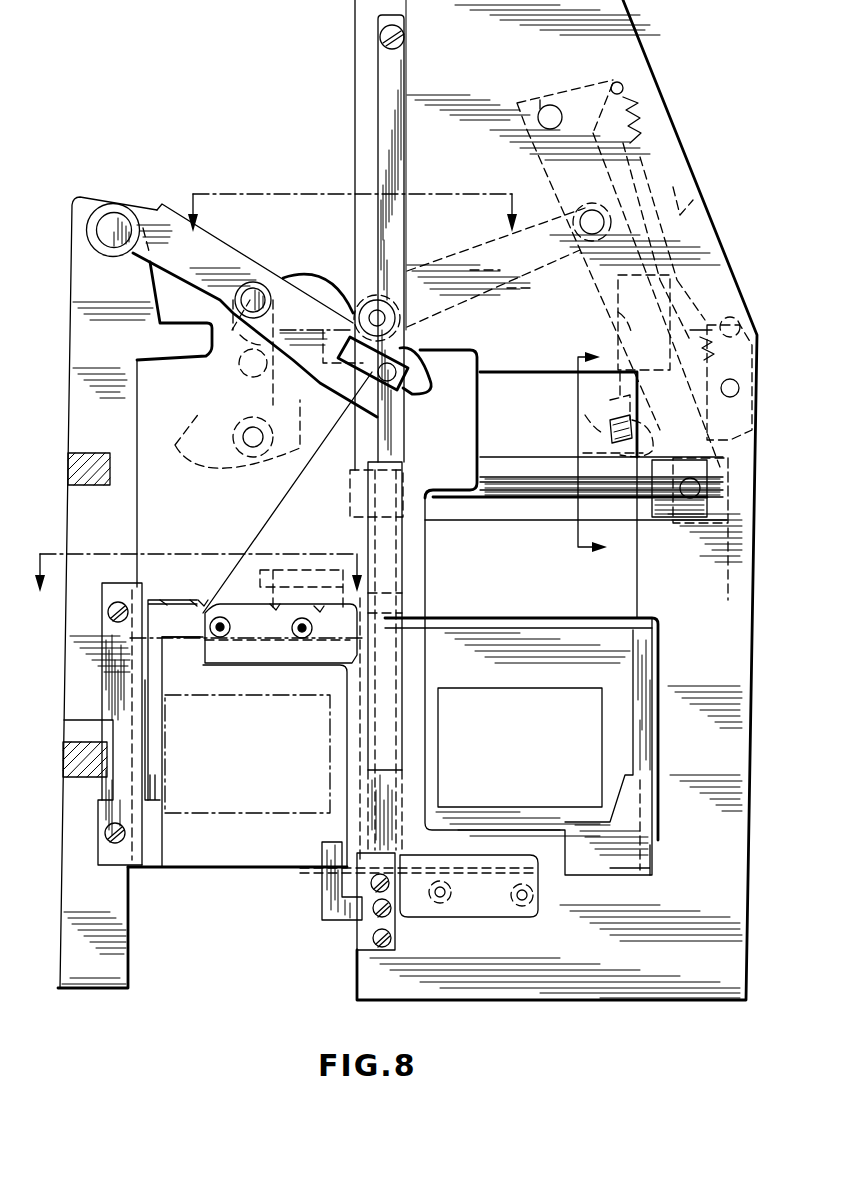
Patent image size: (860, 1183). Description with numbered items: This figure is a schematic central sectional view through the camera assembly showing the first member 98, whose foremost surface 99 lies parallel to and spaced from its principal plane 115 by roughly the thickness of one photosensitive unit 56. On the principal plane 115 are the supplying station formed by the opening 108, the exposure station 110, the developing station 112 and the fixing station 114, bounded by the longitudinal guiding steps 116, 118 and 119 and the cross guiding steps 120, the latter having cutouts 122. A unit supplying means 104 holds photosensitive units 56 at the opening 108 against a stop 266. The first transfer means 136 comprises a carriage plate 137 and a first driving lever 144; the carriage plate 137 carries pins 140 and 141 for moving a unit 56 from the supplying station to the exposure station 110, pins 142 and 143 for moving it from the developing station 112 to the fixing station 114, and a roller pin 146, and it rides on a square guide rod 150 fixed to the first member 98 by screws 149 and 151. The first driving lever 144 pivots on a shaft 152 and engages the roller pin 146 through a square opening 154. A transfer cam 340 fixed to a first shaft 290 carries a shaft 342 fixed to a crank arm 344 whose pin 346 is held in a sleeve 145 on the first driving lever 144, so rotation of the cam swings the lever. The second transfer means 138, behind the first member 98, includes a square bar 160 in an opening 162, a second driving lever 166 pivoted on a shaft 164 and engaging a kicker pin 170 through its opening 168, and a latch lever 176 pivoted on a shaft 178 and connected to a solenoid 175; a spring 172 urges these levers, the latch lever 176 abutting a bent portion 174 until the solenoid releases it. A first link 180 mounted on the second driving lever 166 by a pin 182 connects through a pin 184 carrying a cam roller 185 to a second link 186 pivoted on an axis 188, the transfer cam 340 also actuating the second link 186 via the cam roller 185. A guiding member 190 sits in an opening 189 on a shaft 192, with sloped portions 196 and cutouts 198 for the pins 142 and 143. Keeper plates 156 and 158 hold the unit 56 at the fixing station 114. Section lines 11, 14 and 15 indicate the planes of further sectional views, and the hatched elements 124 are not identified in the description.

The first member 98 is at (666, 100).
The foremost surface 99 is at (496, 244).
The section line 11— 11 is at (354, 212).
The section line 14— 14 is at (603, 451).
The section line 15— 15 is at (195, 707).
The screw 149 is at (404, 37).
The square guide rod 150 is at (395, 248).
The shaft 152 is at (112, 224).
The first driving lever 144 is at (255, 310).
The sleeve 145 is at (246, 280).
The pin 346 is at (273, 282).
The pin 184 is at (364, 302).
The cam roller 185 is at (368, 316).
The second link 186 is at (400, 428).
The roller pin 146 is at (432, 386).
The square opening 154 is at (340, 343).
The cutouts 122 is at (222, 332).
The first shaft 290 is at (253, 380).
The shaft 342 is at (233, 447).
The crank arm 344 is at (268, 418).
The transfer cam 340 is at (242, 478).
The axis 188 is at (306, 466).
The first link 180 is at (498, 258).
The shaft 164 is at (548, 100).
The pin 182 is at (592, 210).
The spring 172 is at (687, 195).
The second driving lever 166 is at (588, 280).
The solenoid 175 is at (644, 322).
The first transfer means 136 is at (483, 348).
The carriage plate 137 is at (480, 423).
The cross guiding steps 120 is at (562, 375).
The bent portion 174 is at (630, 410).
The latch lever 176 is at (573, 423).
The opening 168 is at (693, 432).
The shaft 178 is at (717, 397).
The pin 170 is at (703, 463).
The opening 162 is at (532, 470).
The square bar 160 is at (535, 485).
The second transfer means 138 is at (652, 503).
The exposure station 110 is at (538, 686).
The principal plane 115 is at (548, 591).
The unit supplying means 104 is at (665, 666).
The photosensitive unit 56 is at (512, 659).
The opening 108 is at (520, 747).
The stop 266 is at (643, 775).
The longitudinal guiding step 116 is at (637, 575).
The longitudinal guiding step 119 is at (137, 510).
The pad 124 is at (70, 472).
The developing station 112 is at (186, 532).
The opening 189 is at (172, 733).
The guiding member 190 is at (172, 600).
The sloped portions 196 is at (203, 600).
The shaft 192 is at (270, 550).
The pin 142 is at (233, 632).
The cutouts 198 is at (313, 620).
The pin 143 is at (295, 645).
The longitudinal guiding step 118 is at (360, 713).
The fixing station 114 is at (247, 754).
The keeper plate 156 is at (117, 853).
The keeper plate 158 is at (327, 907).
The screw 151 is at (395, 890).
The pin 140 is at (444, 882).
The pin 141 is at (508, 883).